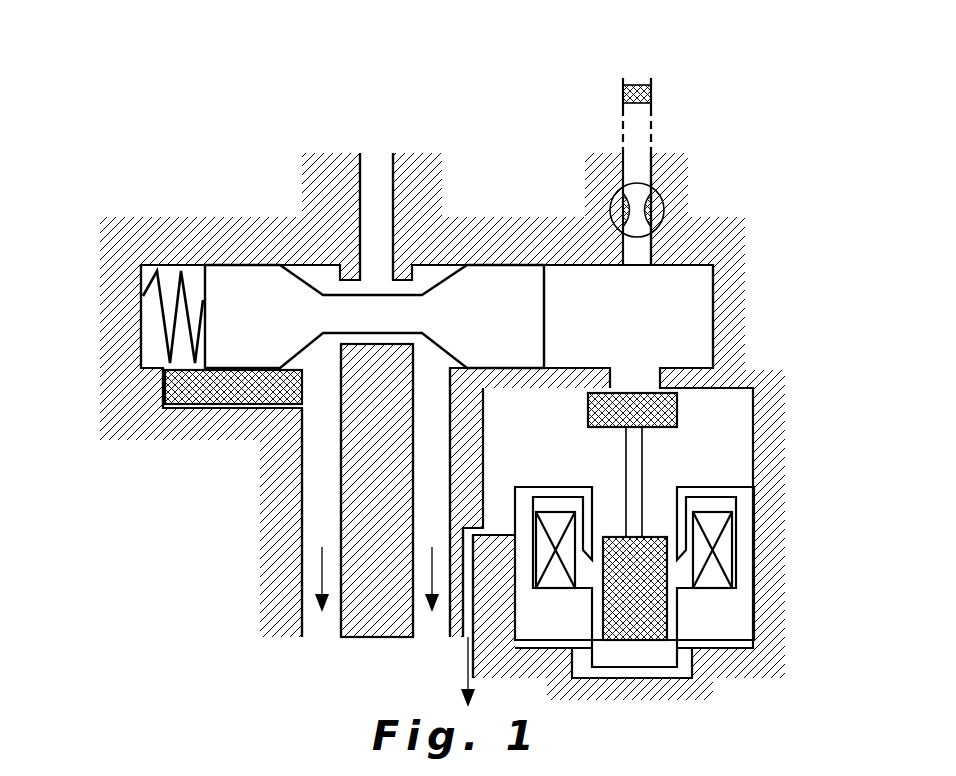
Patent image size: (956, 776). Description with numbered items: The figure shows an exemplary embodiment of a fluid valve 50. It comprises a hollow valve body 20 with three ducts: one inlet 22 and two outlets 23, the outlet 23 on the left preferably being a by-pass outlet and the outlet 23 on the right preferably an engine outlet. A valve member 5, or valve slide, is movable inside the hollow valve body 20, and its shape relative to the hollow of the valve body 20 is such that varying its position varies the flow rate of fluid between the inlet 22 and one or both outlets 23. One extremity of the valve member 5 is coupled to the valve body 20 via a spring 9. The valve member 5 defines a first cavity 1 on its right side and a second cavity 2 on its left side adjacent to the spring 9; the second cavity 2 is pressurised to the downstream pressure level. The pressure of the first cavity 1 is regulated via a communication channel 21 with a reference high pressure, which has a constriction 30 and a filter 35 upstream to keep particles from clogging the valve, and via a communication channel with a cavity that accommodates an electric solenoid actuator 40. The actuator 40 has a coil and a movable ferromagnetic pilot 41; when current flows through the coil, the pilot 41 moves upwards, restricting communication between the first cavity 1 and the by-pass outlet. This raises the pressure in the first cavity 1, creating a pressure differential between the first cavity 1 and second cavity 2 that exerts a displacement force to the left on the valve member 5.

The first cavity 1 is at (623, 333).
The second cavity 2 is at (148, 362).
The valve member 5 is at (486, 333).
The spring 9 is at (163, 287).
The hollow valve body 20 is at (278, 513).
The communication channel 21 is at (638, 60).
The inlet 22 is at (377, 200).
The outlets 23 is at (388, 525).
The constriction 30 is at (662, 198).
The filter 35 is at (651, 92).
The electric solenoid actuator 40 is at (676, 529).
The ferromagnetic pilot 41 is at (640, 465).
The fluid valve 50 is at (442, 377).